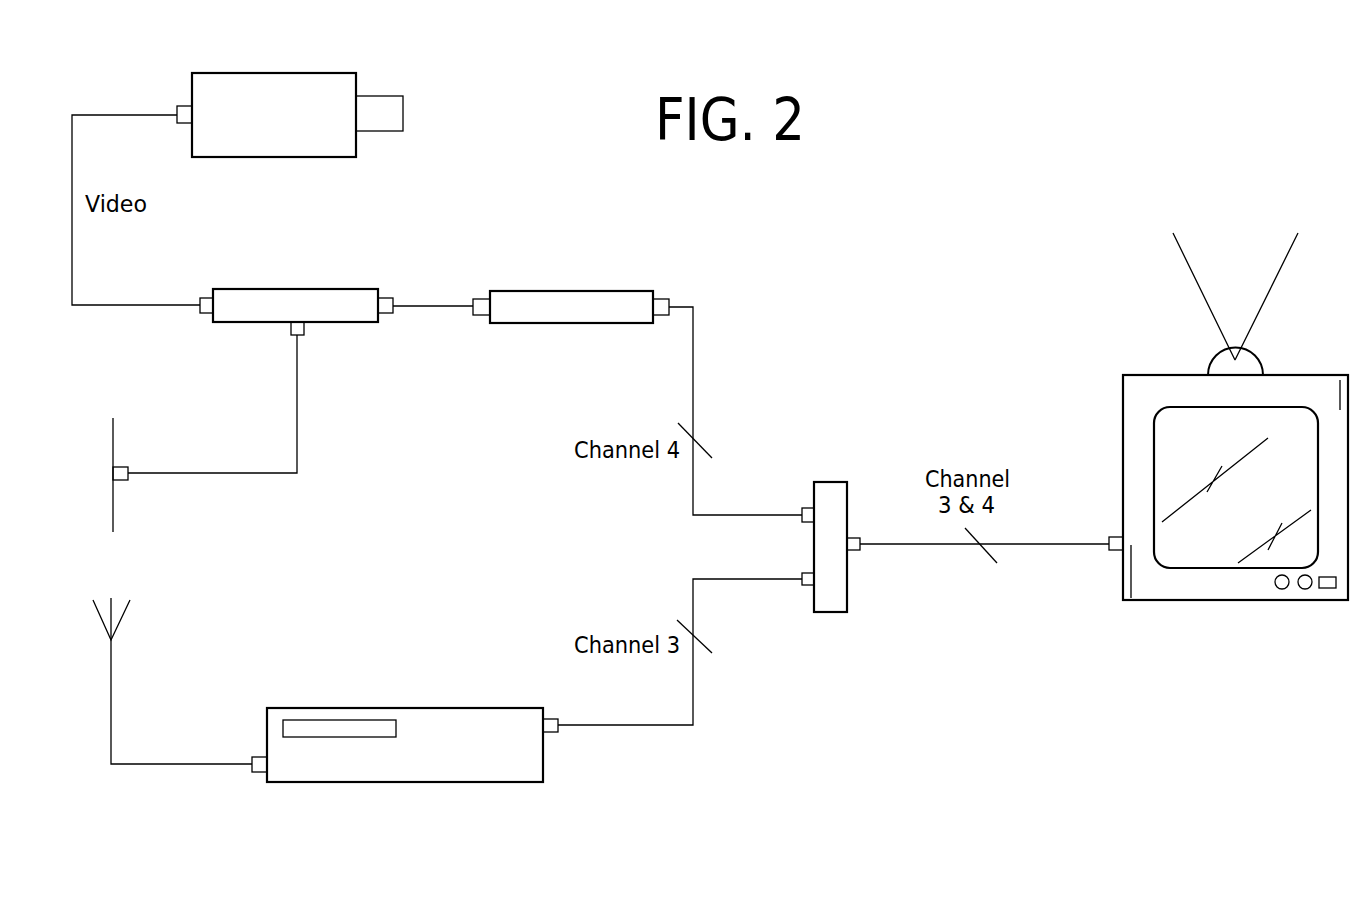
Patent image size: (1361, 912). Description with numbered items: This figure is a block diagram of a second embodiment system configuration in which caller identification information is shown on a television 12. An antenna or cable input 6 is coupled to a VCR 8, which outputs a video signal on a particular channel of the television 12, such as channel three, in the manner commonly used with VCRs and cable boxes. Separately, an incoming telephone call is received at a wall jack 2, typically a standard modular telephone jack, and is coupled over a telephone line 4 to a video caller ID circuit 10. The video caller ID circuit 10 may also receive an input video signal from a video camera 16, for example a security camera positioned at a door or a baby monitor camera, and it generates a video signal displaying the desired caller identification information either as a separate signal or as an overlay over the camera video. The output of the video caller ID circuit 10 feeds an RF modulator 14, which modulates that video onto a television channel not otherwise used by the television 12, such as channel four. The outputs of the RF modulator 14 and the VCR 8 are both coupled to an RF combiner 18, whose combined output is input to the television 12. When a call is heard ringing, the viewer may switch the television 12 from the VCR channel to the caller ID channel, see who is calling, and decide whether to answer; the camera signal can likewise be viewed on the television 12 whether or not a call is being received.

The jack 2 is at (122, 480).
The telephone line 4 is at (220, 473).
The input 6 is at (108, 640).
The VCR 8 is at (425, 708).
The video caller ID circuit 10 is at (260, 322).
The television 12 is at (1123, 392).
The RF modulator 14 is at (580, 323).
The video camera 16 is at (356, 157).
The RF combiner 18 is at (830, 482).